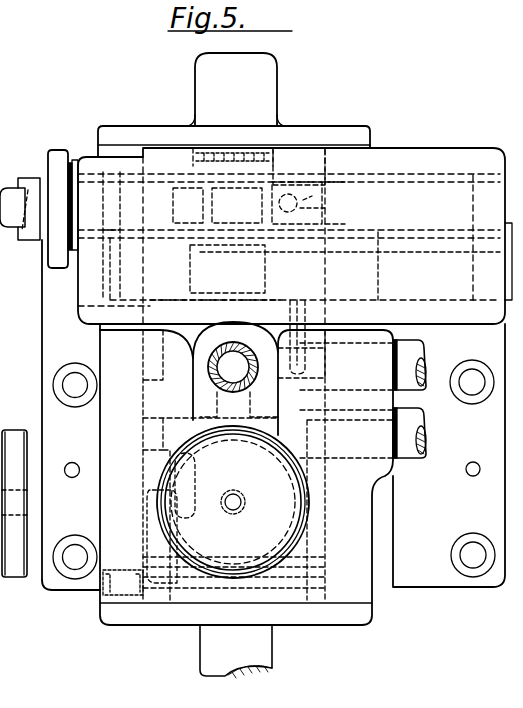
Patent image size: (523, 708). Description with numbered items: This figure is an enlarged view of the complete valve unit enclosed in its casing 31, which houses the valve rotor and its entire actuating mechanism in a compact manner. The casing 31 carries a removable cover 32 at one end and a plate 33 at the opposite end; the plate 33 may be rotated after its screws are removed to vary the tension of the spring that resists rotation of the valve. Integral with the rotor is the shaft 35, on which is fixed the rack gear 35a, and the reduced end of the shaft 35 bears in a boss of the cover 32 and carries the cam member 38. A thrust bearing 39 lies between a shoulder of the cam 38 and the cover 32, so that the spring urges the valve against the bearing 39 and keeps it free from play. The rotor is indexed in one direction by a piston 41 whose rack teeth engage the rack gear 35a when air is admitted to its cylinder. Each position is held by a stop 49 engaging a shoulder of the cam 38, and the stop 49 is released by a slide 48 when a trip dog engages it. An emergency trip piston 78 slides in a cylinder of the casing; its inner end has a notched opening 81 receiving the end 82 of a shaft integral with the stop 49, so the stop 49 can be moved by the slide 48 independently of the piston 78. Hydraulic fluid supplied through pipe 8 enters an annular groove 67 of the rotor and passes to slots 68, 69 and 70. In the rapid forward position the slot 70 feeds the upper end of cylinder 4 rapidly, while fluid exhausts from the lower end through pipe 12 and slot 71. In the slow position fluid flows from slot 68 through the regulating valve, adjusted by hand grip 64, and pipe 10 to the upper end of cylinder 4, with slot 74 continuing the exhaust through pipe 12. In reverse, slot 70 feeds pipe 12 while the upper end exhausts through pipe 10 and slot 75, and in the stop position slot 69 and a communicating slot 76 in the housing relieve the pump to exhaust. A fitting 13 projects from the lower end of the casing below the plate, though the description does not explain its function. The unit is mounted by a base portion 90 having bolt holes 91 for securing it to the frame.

The cylinder 4 is at (15, 578).
The pipe 8 is at (412, 428).
The pipe 10 is at (217, 375).
The pipe 12 is at (420, 354).
The bottom fitting 13 is at (200, 652).
The casing 31 is at (430, 141).
The removable cover 32 is at (345, 127).
The plate 33 is at (126, 626).
The shaft 35 is at (30, 232).
The rack gear 35a is at (190, 270).
The cam member 38 is at (173, 208).
The thrust bearing 39 is at (186, 150).
The piston 41 is at (378, 300).
The slide 48 is at (30, 190).
The stop 49 is at (322, 190).
The hand grip 64 is at (233, 502).
The annular groove 67 is at (150, 437).
The slot 68 is at (188, 482).
The slot 69 is at (320, 493).
The slot 70 is at (250, 392).
The slot 71 is at (318, 342).
The slot 74 is at (298, 376).
The slot 75 is at (150, 367).
The communicating slot 76 is at (145, 524).
The piston 78 is at (116, 182).
The notched opening 81 is at (328, 209).
The shaft end 82 is at (310, 180).
The base portion 90 is at (449, 455).
The bolt holes 91 is at (78, 372).